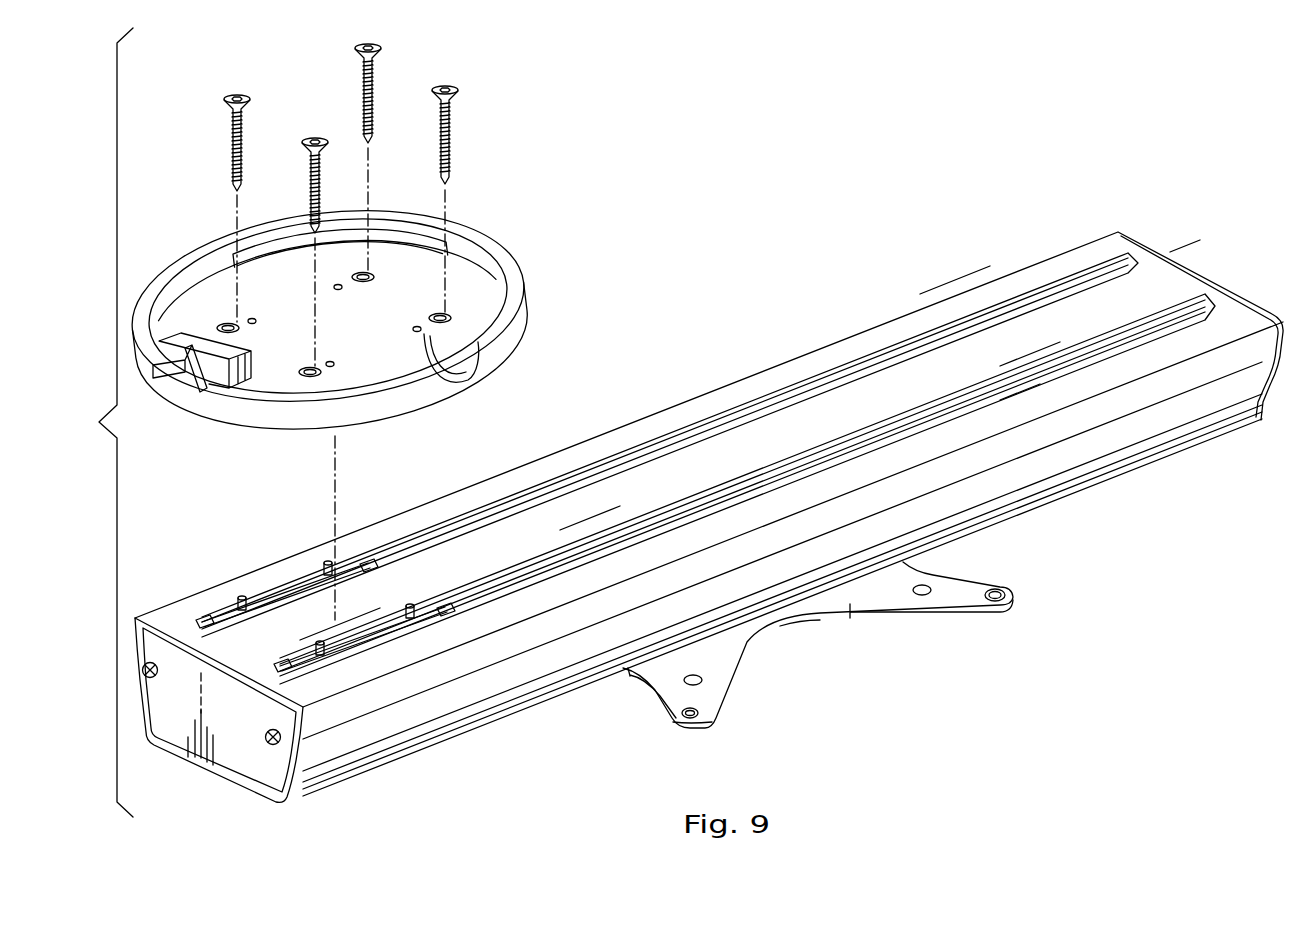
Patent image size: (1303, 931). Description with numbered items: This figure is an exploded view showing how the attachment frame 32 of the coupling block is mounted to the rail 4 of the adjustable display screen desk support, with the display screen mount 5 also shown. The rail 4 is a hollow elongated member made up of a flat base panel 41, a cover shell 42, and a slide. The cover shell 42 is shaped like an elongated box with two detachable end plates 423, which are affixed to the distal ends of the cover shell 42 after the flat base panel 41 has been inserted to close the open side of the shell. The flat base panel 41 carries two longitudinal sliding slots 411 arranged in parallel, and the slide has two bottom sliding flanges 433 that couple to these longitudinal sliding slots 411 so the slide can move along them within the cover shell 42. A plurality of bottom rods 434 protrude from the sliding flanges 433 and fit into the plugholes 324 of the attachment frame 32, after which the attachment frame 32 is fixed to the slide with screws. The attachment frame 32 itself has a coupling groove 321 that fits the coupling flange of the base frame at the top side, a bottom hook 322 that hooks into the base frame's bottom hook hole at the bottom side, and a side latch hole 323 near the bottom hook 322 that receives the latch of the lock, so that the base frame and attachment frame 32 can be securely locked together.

The rail 4 is at (709, 519).
The flat base panel 41 is at (906, 378).
The longitudinal sliding slots 411 is at (828, 380).
The cover shell 42 is at (1023, 498).
The end plates 423 is at (227, 763).
The bottom sliding flanges 433 is at (277, 593).
The bottom rods 434 is at (240, 597).
The display screen mount 5 is at (738, 660).
The attachment frame 32 is at (352, 329).
The coupling groove 321 is at (378, 245).
The bottom hook 322 is at (197, 400).
The side latch hole 323 is at (210, 330).
The plugholes 324 is at (255, 298).